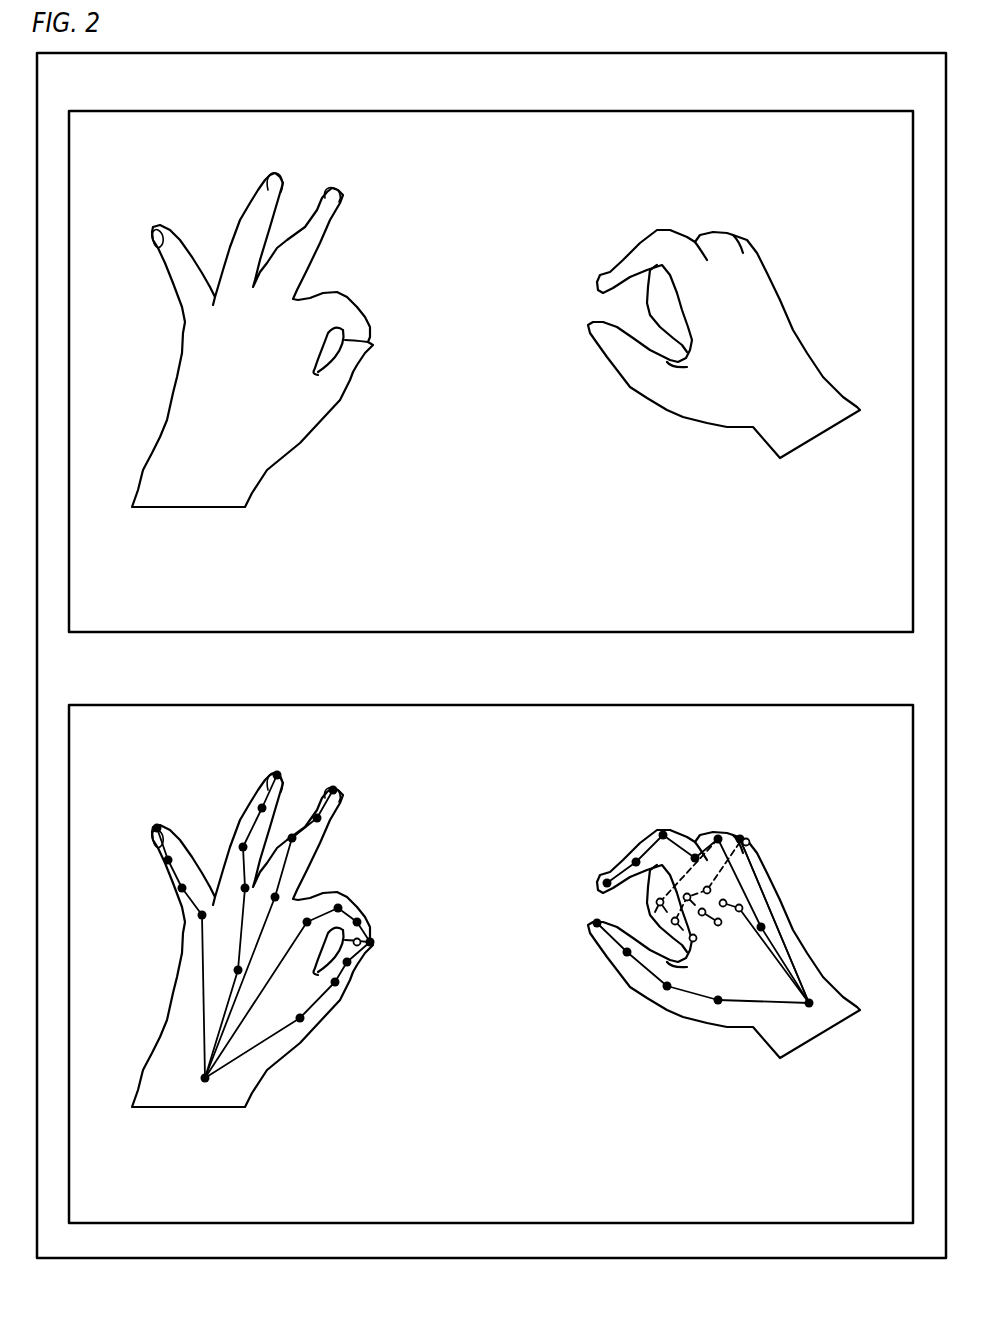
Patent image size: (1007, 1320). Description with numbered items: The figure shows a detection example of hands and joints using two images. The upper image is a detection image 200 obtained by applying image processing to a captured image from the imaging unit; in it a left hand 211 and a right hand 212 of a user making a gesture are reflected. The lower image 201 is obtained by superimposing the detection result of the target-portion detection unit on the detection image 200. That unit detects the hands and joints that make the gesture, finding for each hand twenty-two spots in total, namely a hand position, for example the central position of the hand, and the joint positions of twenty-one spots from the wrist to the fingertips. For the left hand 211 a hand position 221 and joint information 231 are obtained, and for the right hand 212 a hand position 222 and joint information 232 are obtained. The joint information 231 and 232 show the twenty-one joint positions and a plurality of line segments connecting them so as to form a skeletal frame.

The detection image 200 is at (822, 111).
The image 201 is at (822, 705).
The left hand 211 is at (172, 230).
The right hand 212 is at (768, 270).
The hand position 221 is at (233, 970).
The hand position 222 is at (765, 921).
The joint information 231 is at (272, 1035).
The joint information 232 is at (790, 948).